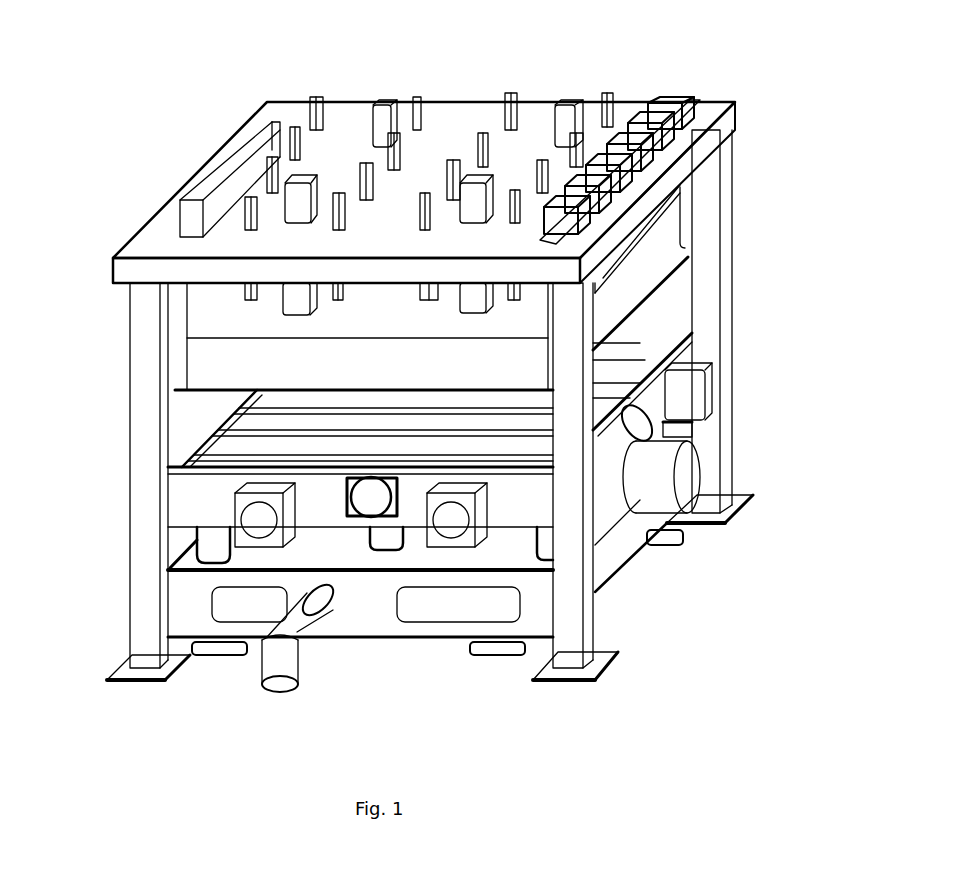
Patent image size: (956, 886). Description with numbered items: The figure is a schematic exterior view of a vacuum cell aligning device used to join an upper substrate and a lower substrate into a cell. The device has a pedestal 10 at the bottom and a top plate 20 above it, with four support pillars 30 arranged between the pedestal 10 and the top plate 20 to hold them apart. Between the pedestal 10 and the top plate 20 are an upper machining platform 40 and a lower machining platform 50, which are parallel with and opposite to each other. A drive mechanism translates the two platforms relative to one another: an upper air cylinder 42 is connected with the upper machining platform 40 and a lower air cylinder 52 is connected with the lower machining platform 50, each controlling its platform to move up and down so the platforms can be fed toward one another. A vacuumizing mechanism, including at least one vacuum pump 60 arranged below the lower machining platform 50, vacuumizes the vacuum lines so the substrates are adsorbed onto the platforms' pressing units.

The pedestal 10 is at (527, 603).
The top plate 20 is at (455, 120).
The support pillars 30 is at (145, 427).
The upper machining platform 40 is at (618, 284).
The upper air cylinder 42 is at (297, 307).
The lower machining platform 50 is at (605, 443).
The lower air cylinder 52 is at (220, 535).
The vacuum pump 60 is at (687, 475).